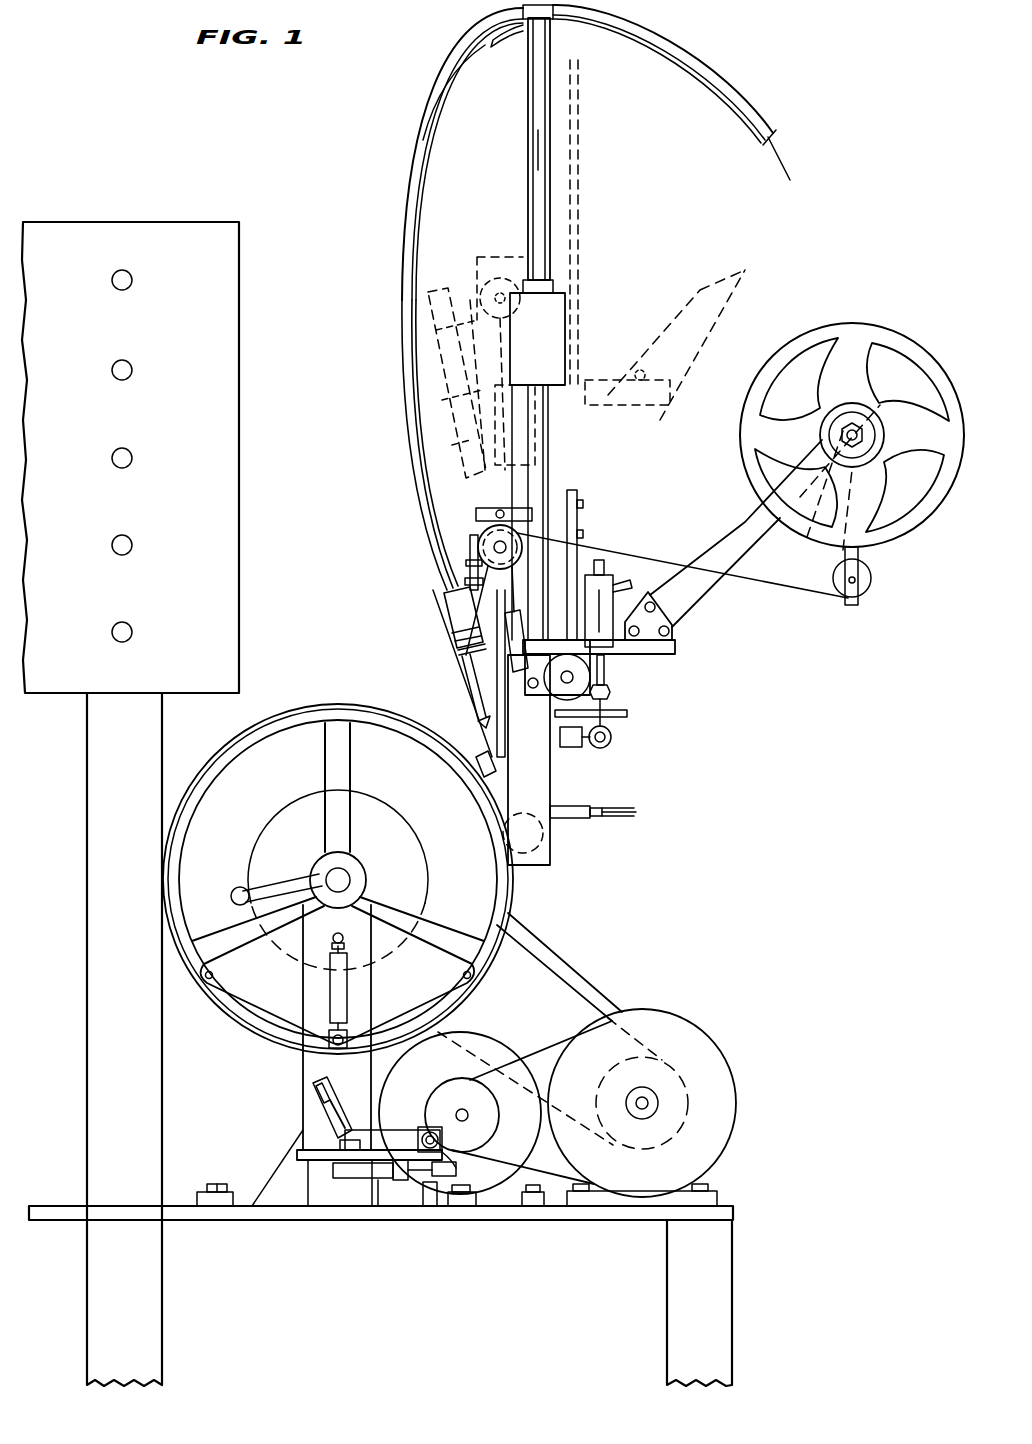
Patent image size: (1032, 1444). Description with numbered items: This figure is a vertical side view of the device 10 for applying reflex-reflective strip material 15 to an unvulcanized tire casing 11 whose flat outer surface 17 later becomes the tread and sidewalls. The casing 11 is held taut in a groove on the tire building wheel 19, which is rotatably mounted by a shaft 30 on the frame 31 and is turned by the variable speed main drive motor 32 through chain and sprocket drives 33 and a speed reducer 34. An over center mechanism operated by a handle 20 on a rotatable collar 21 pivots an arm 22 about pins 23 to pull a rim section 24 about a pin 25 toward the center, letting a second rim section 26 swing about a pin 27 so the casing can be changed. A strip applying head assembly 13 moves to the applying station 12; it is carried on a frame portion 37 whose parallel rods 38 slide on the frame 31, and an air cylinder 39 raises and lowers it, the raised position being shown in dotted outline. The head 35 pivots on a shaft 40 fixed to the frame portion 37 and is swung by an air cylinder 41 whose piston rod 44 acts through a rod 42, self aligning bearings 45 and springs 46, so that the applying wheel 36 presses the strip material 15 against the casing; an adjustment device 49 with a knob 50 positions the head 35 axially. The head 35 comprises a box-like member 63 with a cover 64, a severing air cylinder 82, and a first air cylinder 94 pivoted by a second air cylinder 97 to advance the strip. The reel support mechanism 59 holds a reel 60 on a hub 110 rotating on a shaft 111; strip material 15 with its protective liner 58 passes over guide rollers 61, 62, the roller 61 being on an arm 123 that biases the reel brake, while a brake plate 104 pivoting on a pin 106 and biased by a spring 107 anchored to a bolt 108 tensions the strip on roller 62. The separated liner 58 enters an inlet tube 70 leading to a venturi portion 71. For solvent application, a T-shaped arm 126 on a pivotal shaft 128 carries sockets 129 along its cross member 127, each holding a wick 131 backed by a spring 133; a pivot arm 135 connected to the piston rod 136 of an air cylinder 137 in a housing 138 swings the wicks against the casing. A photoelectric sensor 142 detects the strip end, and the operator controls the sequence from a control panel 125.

The device 10 is at (690, 700).
The tire casing 11 is at (310, 712).
The applying station 12 is at (512, 872).
The strip applying head assembly 13 is at (552, 850).
The strip material 15 is at (755, 582).
The outer surface 17 is at (232, 1018).
The tire building wheel 19 is at (322, 768).
The handle 20 is at (275, 887).
The collar 21 is at (356, 866).
The arm 22 is at (330, 995).
The pins 23 is at (333, 936).
The rim section 24 is at (288, 1035).
The pin 25 is at (214, 975).
The second rim section 26 is at (438, 998).
The pin 27 is at (472, 975).
The shaft 30 is at (352, 878).
The frame 31 is at (373, 980).
The main drive motor 32 is at (432, 1077).
The chain and sprocket drives 33 is at (538, 1050).
The speed reducer 34 is at (700, 1050).
The head 35 is at (546, 833).
The applying wheel 36 is at (527, 857).
The frame portion 37 is at (582, 282).
The rods 38 is at (540, 485).
The air cylinder 39 is at (545, 156).
The shaft 40 is at (533, 688).
The air cylinder 41 is at (608, 360).
The rod 42 is at (612, 737).
The piston rod 44 is at (606, 674).
The self aligning bearings 45 is at (606, 745).
The spring 46 is at (610, 700).
The adjustment device 49 is at (605, 668).
The knob 50 is at (618, 425).
The protective liner 58 is at (790, 178).
The reel support mechanism 59 is at (832, 412).
The reel 60 is at (762, 372).
The guide roller 61 is at (866, 586).
The guide roller 62 is at (490, 262).
The box-like member 63 is at (552, 778).
The cover 64 is at (542, 805).
The inlet tube 70 is at (466, 676).
The venturi portion 71 is at (450, 622).
The air cylinder 82 is at (576, 810).
The first air cylinder 94 is at (507, 655).
The second air cylinder 97 is at (565, 725).
The brake plate 104 is at (480, 512).
The pin 106 is at (500, 510).
The spring 107 is at (478, 542).
The bolt 108 is at (466, 562).
The hub 110 is at (855, 468).
The shaft 111 is at (858, 437).
The arm 123 is at (845, 553).
The control panel 125 is at (238, 418).
The T-shaped arm 126 is at (395, 1142).
The cross member 127 is at (132, 632).
The shaft 128 is at (443, 1140).
The socket 129 is at (327, 1110).
The wick 131 is at (314, 1088).
The spring 133 is at (318, 1094).
The pivot arm 135 is at (452, 1166).
The piston rod 136 is at (425, 1185).
The air cylinder 137 is at (380, 1180).
The housing 138 is at (356, 1178).
The photoelectric sensor 142 is at (482, 764).